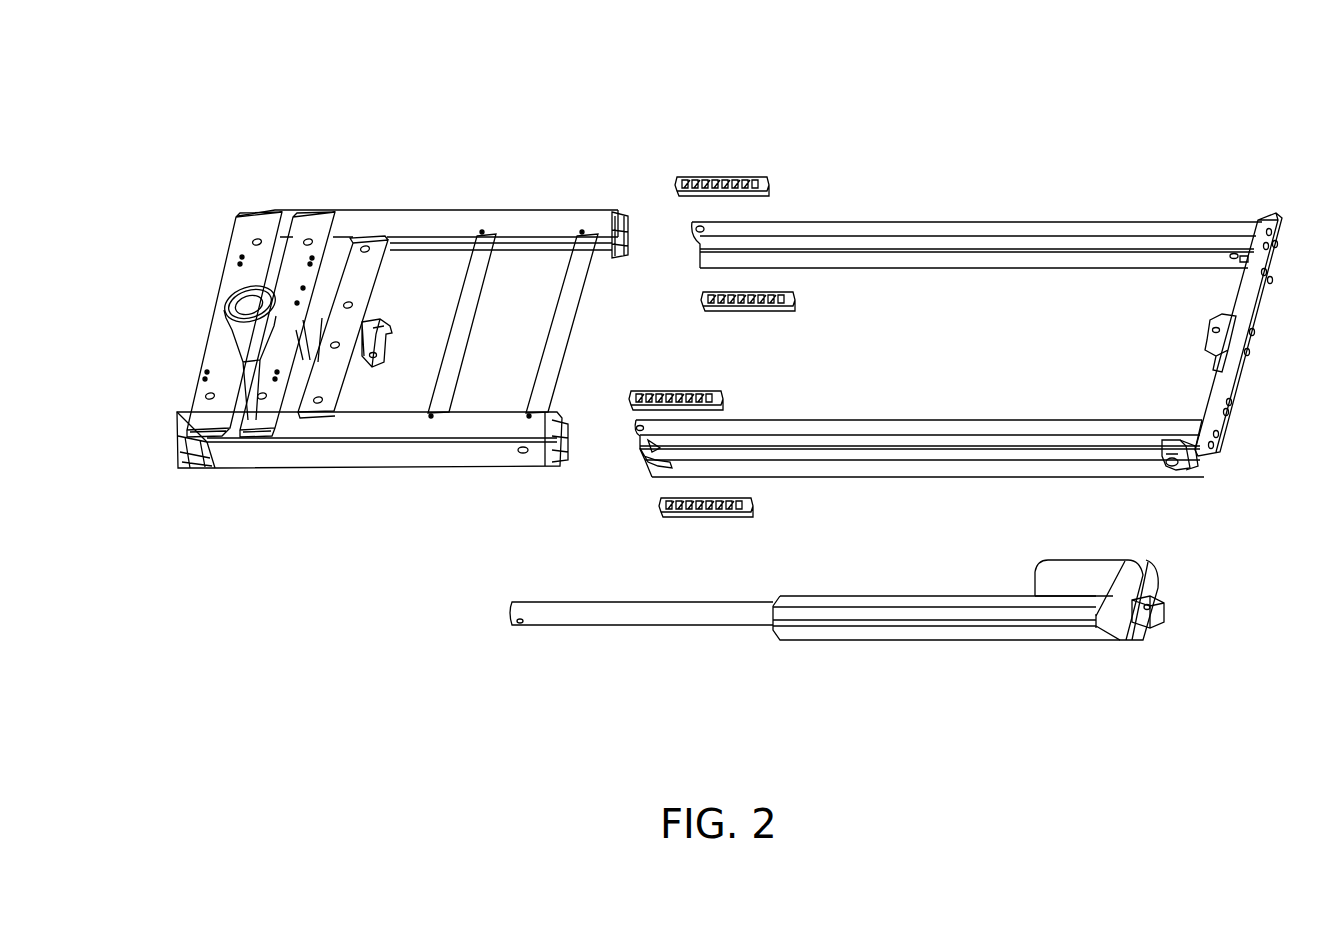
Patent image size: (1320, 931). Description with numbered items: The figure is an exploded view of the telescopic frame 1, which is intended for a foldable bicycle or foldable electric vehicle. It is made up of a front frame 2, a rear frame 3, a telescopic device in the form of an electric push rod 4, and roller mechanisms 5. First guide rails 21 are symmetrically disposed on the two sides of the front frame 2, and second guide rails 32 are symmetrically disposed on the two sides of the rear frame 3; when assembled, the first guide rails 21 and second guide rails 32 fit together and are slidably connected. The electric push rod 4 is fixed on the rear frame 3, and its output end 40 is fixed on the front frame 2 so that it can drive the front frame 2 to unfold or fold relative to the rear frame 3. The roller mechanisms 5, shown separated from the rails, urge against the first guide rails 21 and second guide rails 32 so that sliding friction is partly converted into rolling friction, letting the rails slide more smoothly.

The telescopic frame 1 is at (192, 79).
The front frame 2 is at (300, 463).
The first guide rail 21 is at (524, 222).
The rear frame 3 is at (1146, 480).
The second guide rail 32 is at (964, 432).
The electric push rod 4 is at (842, 634).
The output end 40 is at (634, 613).
The roller mechanism 5 is at (752, 293).